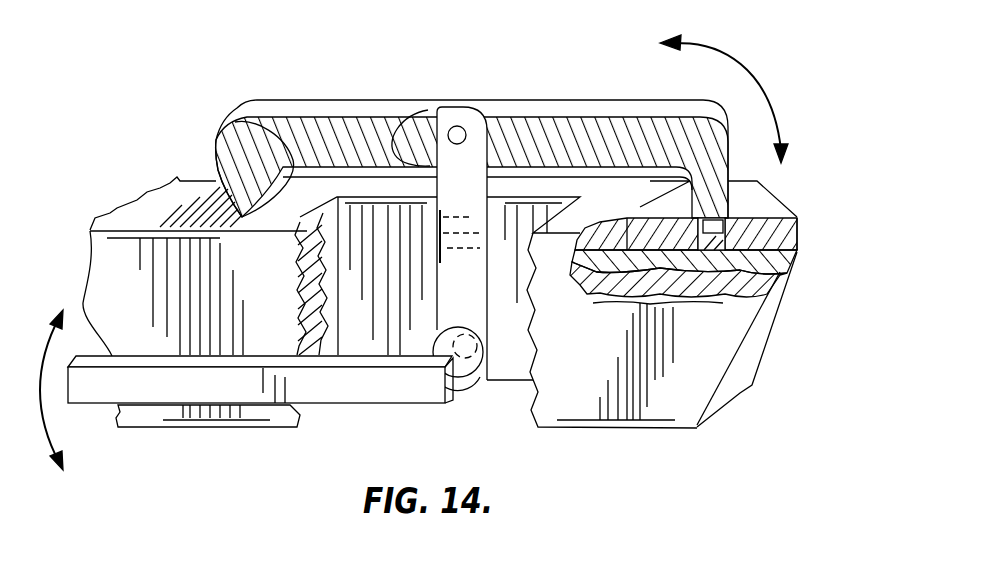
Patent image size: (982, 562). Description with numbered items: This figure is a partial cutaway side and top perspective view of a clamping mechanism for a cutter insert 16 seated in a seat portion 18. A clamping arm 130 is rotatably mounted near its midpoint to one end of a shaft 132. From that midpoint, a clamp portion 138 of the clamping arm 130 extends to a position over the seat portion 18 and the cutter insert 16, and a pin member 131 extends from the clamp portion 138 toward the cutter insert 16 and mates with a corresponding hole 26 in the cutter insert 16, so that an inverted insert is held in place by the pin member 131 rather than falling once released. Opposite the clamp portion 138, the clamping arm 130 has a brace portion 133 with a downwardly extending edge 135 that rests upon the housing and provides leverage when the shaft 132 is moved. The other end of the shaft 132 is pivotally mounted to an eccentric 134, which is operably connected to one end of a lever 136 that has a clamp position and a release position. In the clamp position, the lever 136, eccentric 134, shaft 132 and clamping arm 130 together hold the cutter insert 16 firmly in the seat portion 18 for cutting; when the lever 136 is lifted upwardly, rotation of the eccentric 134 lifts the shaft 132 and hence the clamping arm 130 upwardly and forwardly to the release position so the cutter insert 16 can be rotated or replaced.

The clamping arm 130 is at (553, 107).
The pin member 131 is at (707, 240).
The shaft 132 is at (450, 173).
The brace portion 133 is at (257, 105).
The eccentric 134 is at (484, 382).
The downwardly extending edge 135 is at (235, 122).
The lever 136 is at (197, 390).
The clamp portion 138 is at (716, 117).
The cutter insert 16 is at (727, 243).
The seat portion 18 is at (773, 260).
The hole 26 is at (757, 282).